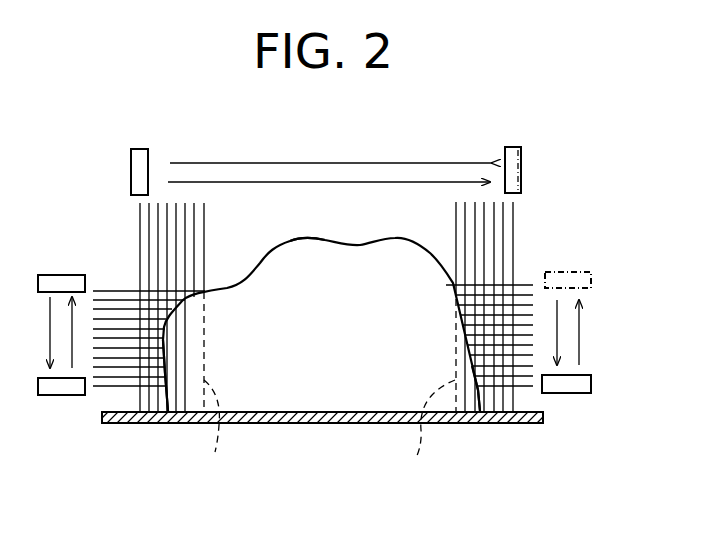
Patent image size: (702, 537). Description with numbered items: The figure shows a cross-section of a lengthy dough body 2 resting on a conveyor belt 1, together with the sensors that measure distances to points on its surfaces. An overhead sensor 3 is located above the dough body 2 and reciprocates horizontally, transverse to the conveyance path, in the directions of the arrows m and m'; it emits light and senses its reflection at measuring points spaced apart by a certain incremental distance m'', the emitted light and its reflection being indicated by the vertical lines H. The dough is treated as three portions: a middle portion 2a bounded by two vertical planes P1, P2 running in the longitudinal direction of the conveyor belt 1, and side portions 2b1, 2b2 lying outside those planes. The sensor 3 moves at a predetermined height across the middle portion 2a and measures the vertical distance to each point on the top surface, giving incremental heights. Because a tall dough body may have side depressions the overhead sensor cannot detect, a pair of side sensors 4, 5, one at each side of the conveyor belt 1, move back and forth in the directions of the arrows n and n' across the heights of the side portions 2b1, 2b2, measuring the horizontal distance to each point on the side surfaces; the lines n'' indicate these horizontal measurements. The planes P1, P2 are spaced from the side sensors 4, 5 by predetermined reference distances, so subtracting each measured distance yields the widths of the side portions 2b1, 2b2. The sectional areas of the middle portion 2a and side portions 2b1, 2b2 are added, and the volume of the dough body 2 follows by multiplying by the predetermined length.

The conveyor belt 1 is at (262, 425).
The dough body 2 is at (337, 372).
The middle portion of the dough body 2a is at (328, 350).
The side portion of the dough body 2b1 is at (187, 385).
The side portion of the dough body 2b2 is at (468, 393).
The sensor 3 is at (139, 149).
The side sensor 4 is at (50, 396).
The side sensor 5 is at (584, 385).
The vertical lines H is at (117, 290).
The vertical plane P1 is at (222, 426).
The vertical plane P2 is at (423, 433).
The direction of movement of the sensor m is at (329, 194).
The direction of movement of the sensor m' is at (331, 150).
The incremental distance m'' is at (329, 305).
The direction of movement of the side sensors n is at (334, 332).
The direction of movement of the side sensors n' is at (295, 332).
The horizontal scanning lines n'' is at (326, 416).